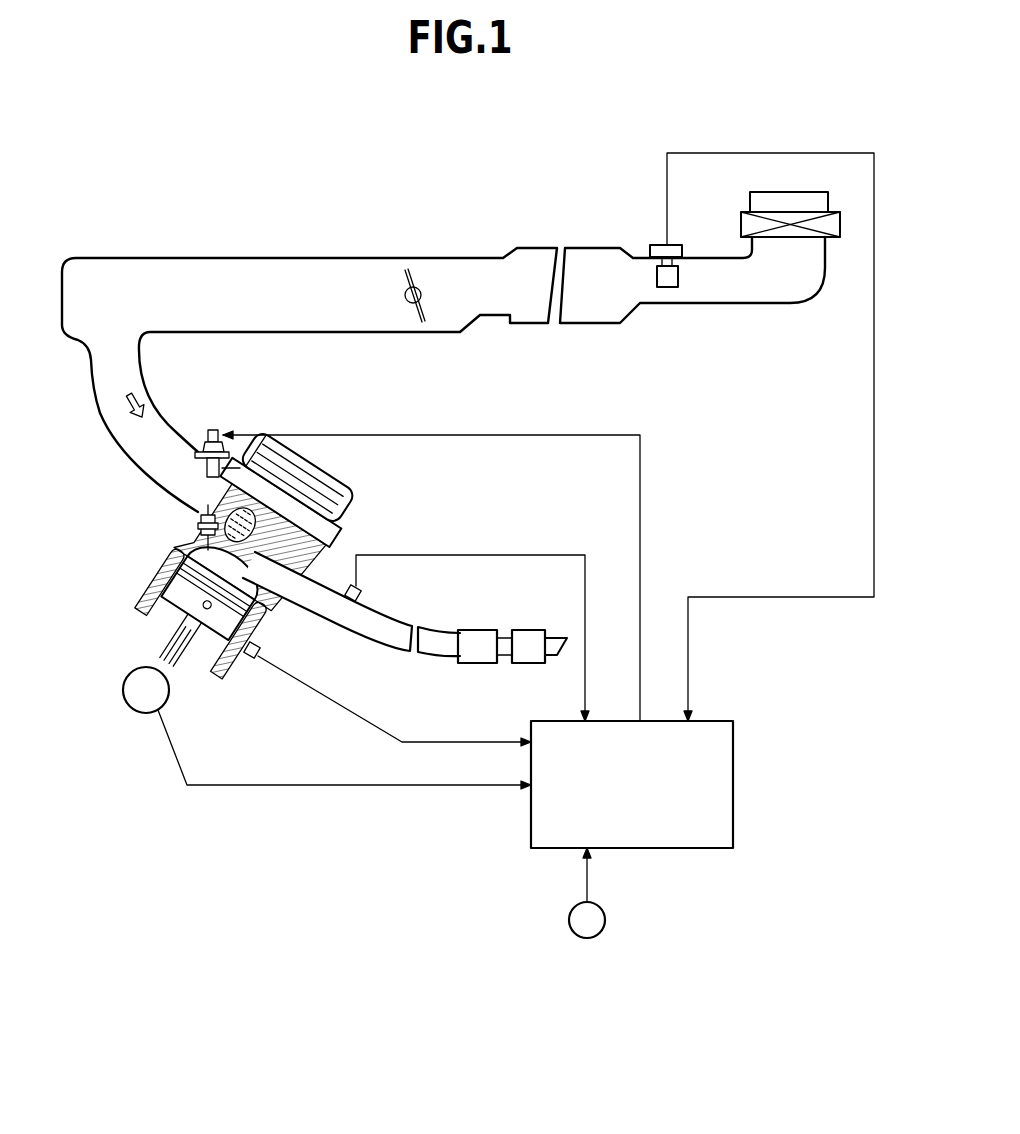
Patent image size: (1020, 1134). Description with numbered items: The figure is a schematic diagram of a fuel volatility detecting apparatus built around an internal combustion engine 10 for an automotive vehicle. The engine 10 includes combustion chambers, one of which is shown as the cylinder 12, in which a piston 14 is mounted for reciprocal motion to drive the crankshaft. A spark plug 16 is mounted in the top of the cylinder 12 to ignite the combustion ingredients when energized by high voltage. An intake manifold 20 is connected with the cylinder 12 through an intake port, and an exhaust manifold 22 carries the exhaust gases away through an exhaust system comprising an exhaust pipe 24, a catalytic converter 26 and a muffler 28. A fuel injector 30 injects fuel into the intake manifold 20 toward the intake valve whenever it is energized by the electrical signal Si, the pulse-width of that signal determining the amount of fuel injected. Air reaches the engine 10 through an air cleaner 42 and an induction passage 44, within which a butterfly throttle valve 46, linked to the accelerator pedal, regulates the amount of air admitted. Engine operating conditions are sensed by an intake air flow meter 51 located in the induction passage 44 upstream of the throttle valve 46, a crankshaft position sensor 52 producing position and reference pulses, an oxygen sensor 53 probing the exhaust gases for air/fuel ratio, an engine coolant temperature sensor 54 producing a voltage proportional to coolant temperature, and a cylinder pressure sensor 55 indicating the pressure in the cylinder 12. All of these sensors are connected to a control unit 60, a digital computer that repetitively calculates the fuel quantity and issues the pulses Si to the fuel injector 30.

The internal combustion engine 10 is at (260, 576).
The cylinder 12 is at (157, 565).
The piston 14 is at (203, 650).
The spark plug 16 is at (200, 518).
The intake manifold 20 is at (95, 380).
The exhaust manifold 22 is at (328, 615).
The exhaust pipe 24 is at (433, 656).
The catalytic converter 26 is at (478, 630).
The muffler 28 is at (530, 630).
The fuel injector 30 is at (212, 430).
The air cleaner 42 is at (741, 216).
The induction passage 44 is at (596, 248).
The butterfly throttle valve 46 is at (410, 317).
The intake air flow meter 51 is at (655, 245).
The crankshaft position sensor 52 is at (135, 712).
The oxygen sensor 53 is at (365, 590).
The engine coolant temperature sensor 54 is at (250, 665).
The cylinder pressure sensor 55 is at (605, 920).
The control unit 60 is at (735, 780).